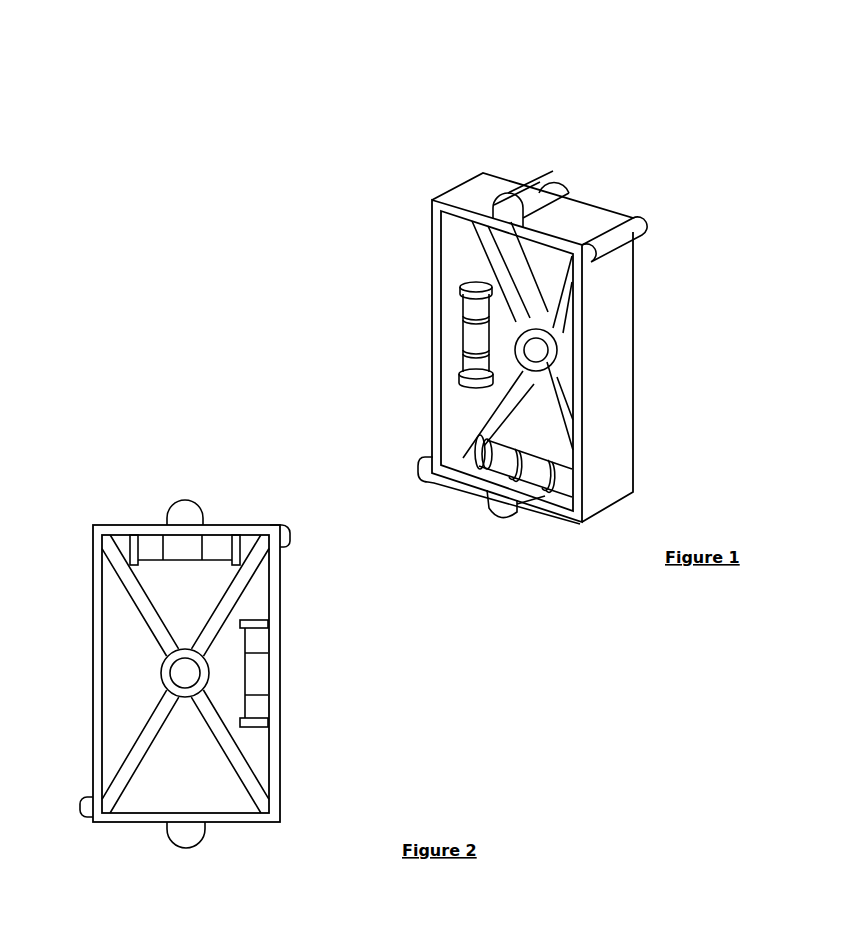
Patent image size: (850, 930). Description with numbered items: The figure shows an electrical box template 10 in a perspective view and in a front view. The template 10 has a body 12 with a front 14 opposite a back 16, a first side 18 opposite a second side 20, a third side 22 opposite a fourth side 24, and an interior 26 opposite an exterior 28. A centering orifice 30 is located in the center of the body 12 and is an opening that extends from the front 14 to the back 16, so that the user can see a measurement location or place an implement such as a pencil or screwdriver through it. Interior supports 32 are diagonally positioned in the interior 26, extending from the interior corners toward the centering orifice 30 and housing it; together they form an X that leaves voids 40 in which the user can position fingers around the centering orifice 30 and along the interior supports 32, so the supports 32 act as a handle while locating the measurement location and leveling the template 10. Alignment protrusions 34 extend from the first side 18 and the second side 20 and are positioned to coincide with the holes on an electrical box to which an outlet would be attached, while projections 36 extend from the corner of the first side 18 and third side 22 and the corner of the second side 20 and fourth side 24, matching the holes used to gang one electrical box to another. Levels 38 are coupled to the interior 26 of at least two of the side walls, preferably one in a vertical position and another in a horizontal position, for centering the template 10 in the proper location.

In FIG. 1, the electrical box template 10 is at (386, 168).
In FIG. 1, the body 12 is at (610, 356).
In FIG. 1, the front 14 is at (448, 318).
In FIG. 1, the back 16 is at (622, 206).
In FIG. 1, the first side 18 is at (481, 196).
In FIG. 2, the first side 18 is at (125, 518).
In FIG. 1, the second side 20 is at (459, 502).
In FIG. 2, the second side 20 is at (130, 830).
In FIG. 1, the third side 22 is at (619, 323).
In FIG. 2, the third side 22 is at (286, 732).
In FIG. 1, the fourth side 24 is at (425, 389).
In FIG. 2, the fourth side 24 is at (90, 677).
In FIG. 1, the interior 26 is at (515, 264).
In FIG. 1, the exterior 28 is at (579, 215).
In FIG. 1, the centering orifice 30 is at (546, 356).
In FIG. 2, the centering orifice 30 is at (178, 677).
In FIG. 1, the interior supports 32 is at (497, 287).
In FIG. 2, the interior supports 32 is at (137, 598).
In FIG. 1, the alignment protrusions 34 is at (539, 186).
In FIG. 2, the alignment protrusions 34 is at (193, 513).
In FIG. 1, the projections 36 is at (640, 231).
In FIG. 2, the projections 36 is at (287, 537).
In FIG. 1, the levels 38 is at (475, 333).
In FIG. 2, the levels 38 is at (188, 547).
In FIG. 2, the voids 40 is at (199, 604).